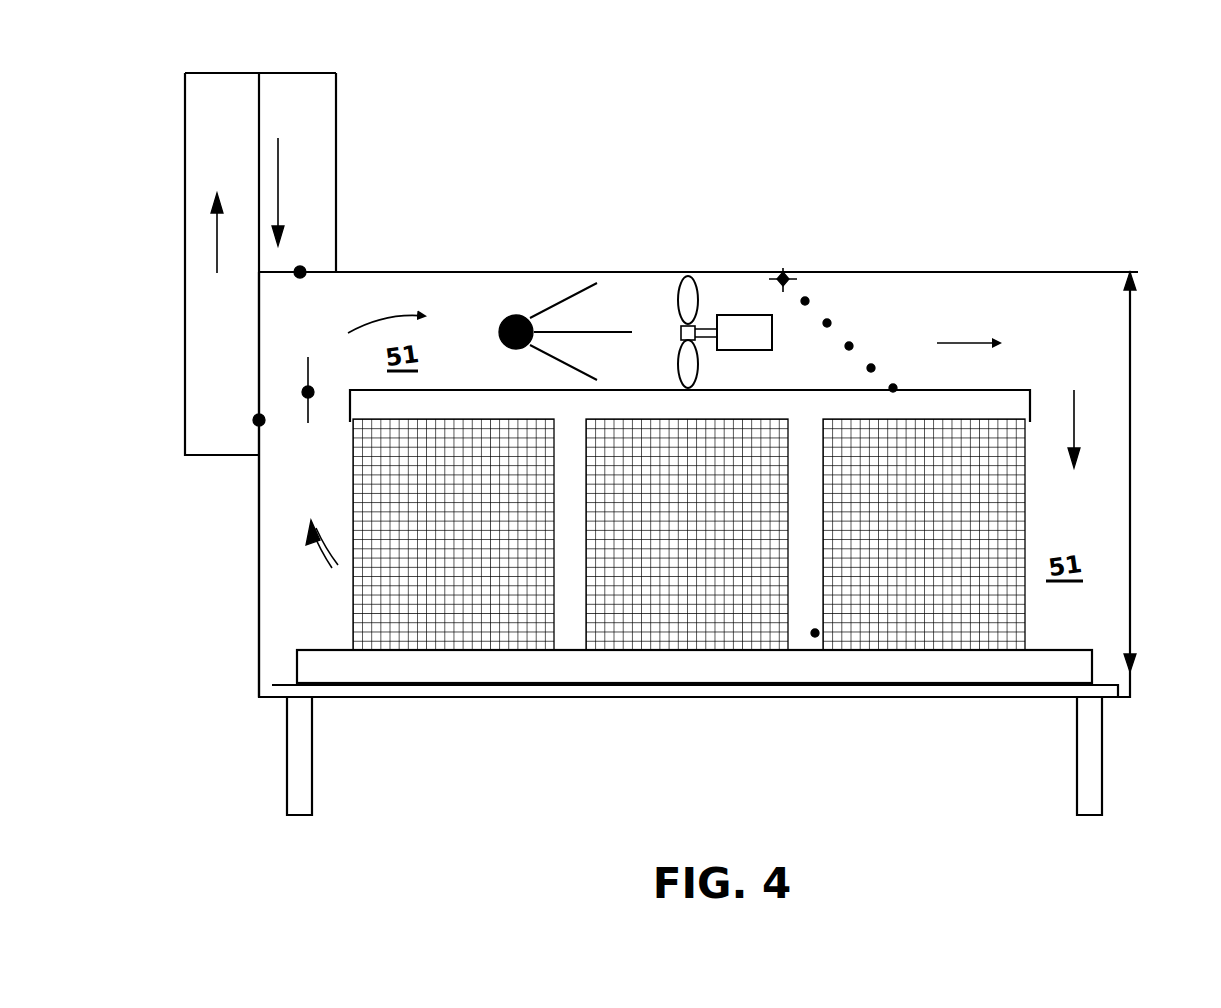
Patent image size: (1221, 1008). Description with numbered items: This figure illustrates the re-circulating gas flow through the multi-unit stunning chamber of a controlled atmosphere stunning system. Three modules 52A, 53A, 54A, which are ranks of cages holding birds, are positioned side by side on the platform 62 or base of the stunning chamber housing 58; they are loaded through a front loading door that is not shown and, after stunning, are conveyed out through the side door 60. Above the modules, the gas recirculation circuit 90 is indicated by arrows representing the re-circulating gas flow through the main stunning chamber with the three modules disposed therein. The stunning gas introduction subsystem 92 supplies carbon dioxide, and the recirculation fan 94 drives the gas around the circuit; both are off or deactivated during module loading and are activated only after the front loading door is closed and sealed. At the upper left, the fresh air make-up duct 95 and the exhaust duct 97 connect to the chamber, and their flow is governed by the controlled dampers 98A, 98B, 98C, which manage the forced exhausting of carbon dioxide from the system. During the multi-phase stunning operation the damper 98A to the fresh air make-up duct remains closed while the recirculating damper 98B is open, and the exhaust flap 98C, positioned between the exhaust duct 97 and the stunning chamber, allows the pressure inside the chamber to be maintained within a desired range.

The stunning chamber housing 58 is at (255, 625).
The side door 60 is at (1131, 458).
The platform 62 is at (1088, 653).
The gas recirculation circuit 90 is at (643, 234).
The stunning gas introduction subsystem 92 is at (500, 308).
The recirculation fan 94 is at (740, 315).
The fresh air make-up duct 95 is at (290, 73).
The exhaust duct 97 is at (185, 190).
The damper 98A is at (305, 270).
The recirculating damper 98B is at (305, 415).
The exhaust flap 98C is at (253, 420).
The module 52A is at (440, 620).
The module 53A is at (705, 620).
The module 54A is at (942, 620).